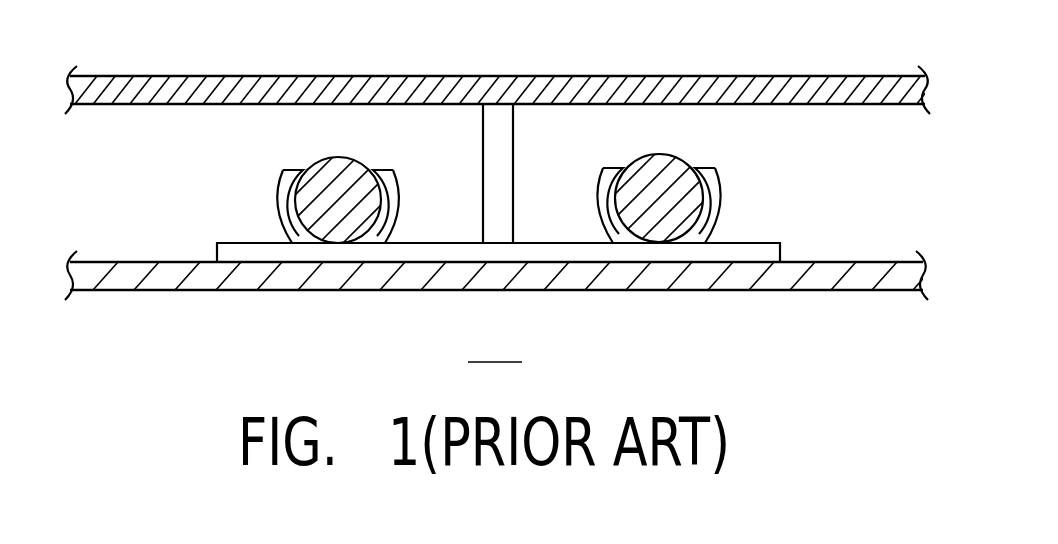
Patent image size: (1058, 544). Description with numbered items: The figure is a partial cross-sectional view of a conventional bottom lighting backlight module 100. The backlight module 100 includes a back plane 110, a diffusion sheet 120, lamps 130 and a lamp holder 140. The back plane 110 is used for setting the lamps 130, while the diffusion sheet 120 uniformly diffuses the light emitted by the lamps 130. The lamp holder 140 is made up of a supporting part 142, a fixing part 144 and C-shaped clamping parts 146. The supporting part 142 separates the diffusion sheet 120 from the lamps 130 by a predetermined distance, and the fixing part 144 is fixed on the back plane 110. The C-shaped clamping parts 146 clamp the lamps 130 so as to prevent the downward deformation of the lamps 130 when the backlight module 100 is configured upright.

The backlight module 100 is at (495, 345).
The back plane 110 is at (770, 291).
The diffusion sheet 120 is at (768, 76).
The lamps 130 is at (318, 163).
The lamp holder 140 is at (181, 156).
The supporting part 142 is at (513, 148).
The fixing part 144 is at (767, 243).
The C-shaped clamping parts 146 is at (275, 200).